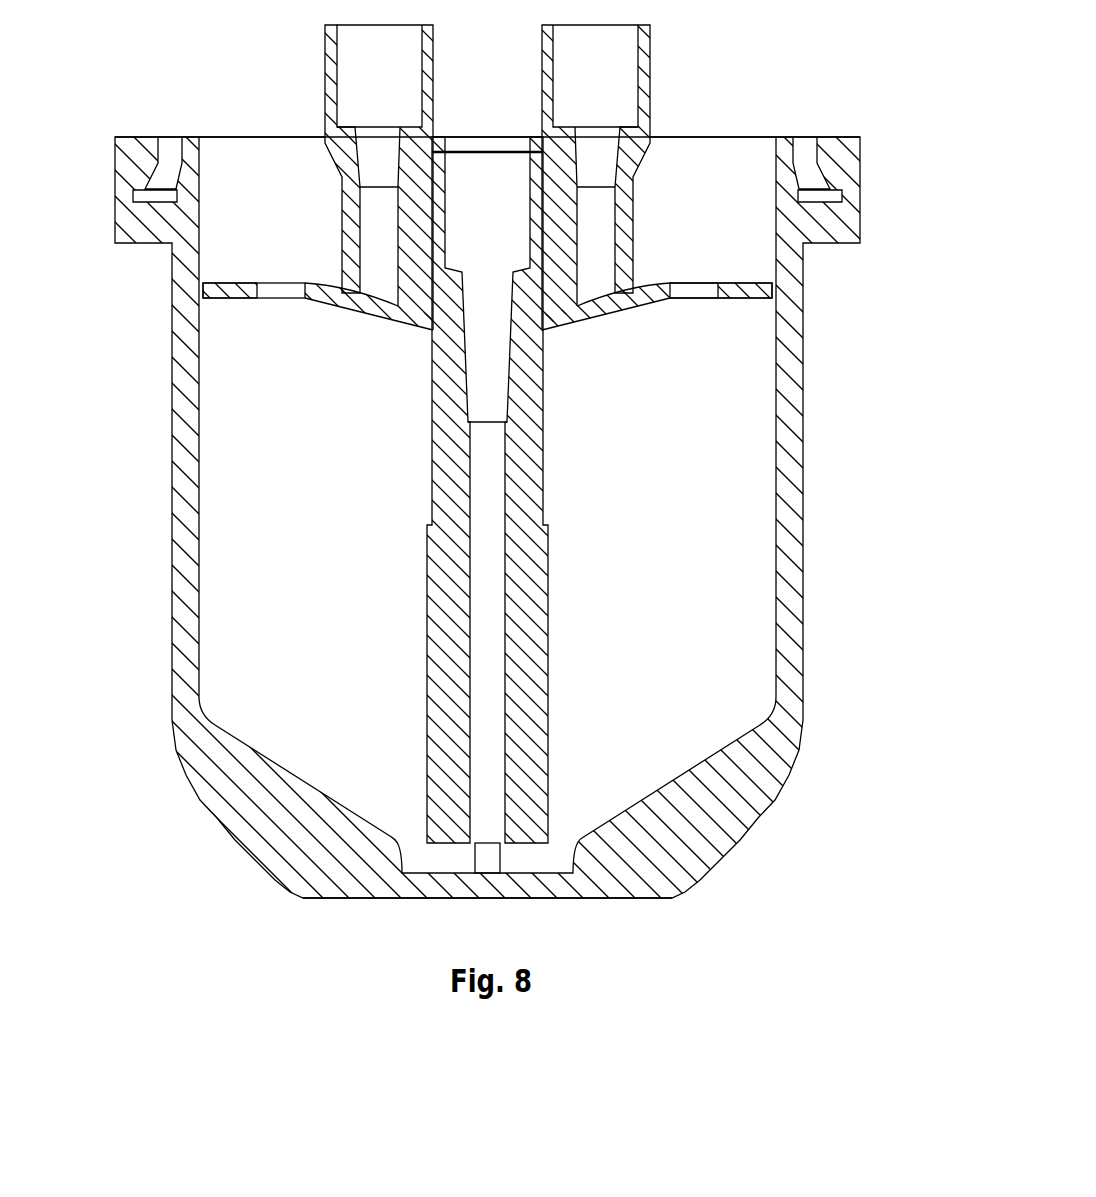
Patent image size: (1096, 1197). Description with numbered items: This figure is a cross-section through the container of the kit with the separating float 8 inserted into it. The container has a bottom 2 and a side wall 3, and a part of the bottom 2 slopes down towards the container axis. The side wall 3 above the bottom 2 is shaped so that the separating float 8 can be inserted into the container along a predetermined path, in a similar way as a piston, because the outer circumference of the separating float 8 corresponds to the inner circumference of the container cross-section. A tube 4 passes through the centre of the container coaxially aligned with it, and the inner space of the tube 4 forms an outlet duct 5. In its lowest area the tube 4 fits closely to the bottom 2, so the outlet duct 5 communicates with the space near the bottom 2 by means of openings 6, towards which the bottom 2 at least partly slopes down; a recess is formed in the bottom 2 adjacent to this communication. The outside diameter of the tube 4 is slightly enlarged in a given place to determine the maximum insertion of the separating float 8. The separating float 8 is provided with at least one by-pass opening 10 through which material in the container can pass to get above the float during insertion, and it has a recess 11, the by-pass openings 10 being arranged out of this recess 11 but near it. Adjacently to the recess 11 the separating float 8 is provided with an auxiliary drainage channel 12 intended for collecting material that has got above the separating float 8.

The bottom 2 is at (360, 812).
The side wall 3 is at (175, 576).
The tube 4 is at (530, 500).
The outlet duct 5 is at (485, 660).
The openings 6 is at (533, 863).
The separating float 8 is at (743, 284).
The by-pass opening 10 is at (685, 288).
The recess 11 is at (385, 298).
The auxiliary drainage channel 12 is at (373, 281).